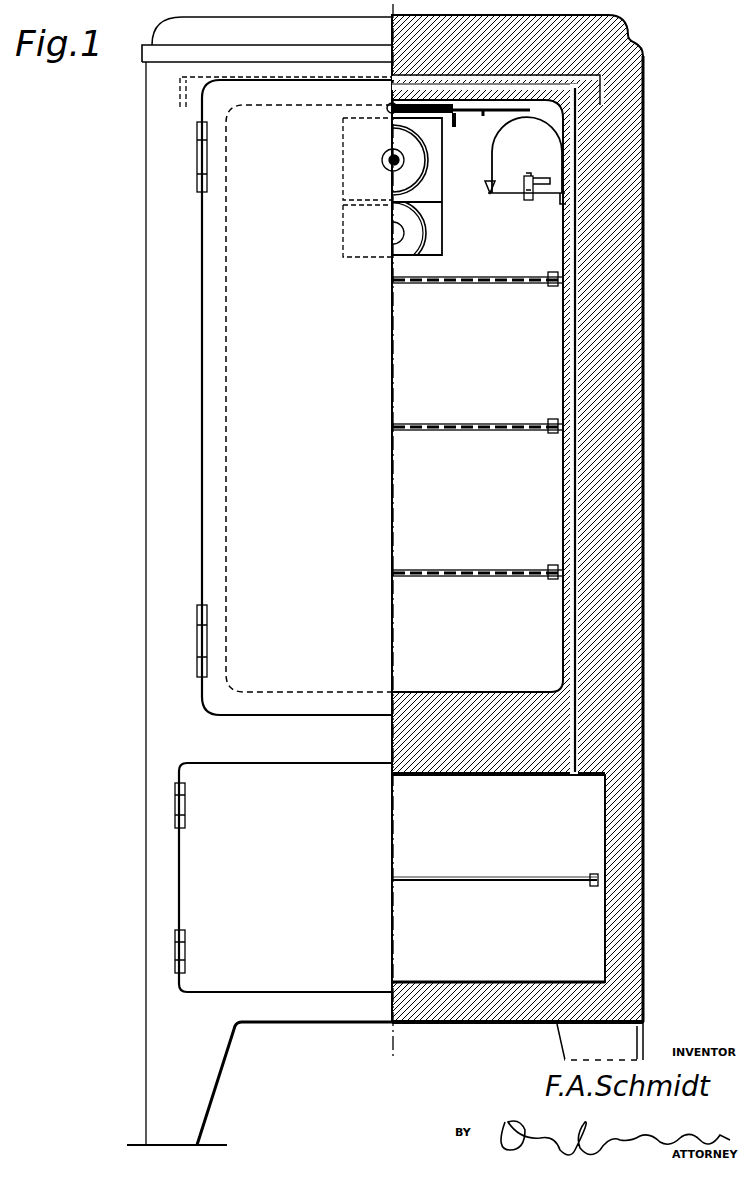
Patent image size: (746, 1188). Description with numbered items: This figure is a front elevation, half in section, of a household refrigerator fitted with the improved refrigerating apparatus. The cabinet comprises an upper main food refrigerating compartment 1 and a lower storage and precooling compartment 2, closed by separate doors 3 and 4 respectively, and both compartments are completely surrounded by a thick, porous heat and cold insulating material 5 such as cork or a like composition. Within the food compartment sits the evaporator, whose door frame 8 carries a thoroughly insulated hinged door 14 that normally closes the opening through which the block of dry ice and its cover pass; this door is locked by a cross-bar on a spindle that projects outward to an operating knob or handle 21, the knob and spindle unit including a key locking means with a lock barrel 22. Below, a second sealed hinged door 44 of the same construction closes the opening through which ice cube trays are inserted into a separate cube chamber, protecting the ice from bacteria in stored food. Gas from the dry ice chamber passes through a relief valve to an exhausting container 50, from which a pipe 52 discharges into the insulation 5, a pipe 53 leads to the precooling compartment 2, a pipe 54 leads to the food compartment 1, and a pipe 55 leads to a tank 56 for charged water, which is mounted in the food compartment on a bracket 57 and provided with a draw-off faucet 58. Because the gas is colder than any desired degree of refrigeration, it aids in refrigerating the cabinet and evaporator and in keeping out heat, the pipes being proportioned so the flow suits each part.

The upper main food refrigerating compartment 1 is at (538, 367).
The lower storage and precooling compartment 2 is at (578, 836).
The door 3 is at (215, 555).
The door 4 is at (200, 850).
The heat and cold insulating material 5 is at (610, 712).
The door frame 8 is at (410, 197).
The insulated door 14 is at (432, 178).
The operating knob or handle 21 is at (392, 157).
The lock barrel 22 is at (393, 164).
The hinged door 44 is at (417, 236).
The exhausting container 50 is at (388, 109).
The pipe 52 is at (182, 95).
The pipe 53 is at (585, 435).
The pipe 54 is at (455, 124).
The pipe 55 is at (483, 116).
The tank 56 is at (506, 172).
The bracket 57 is at (504, 195).
The draw-off faucet 58 is at (527, 200).